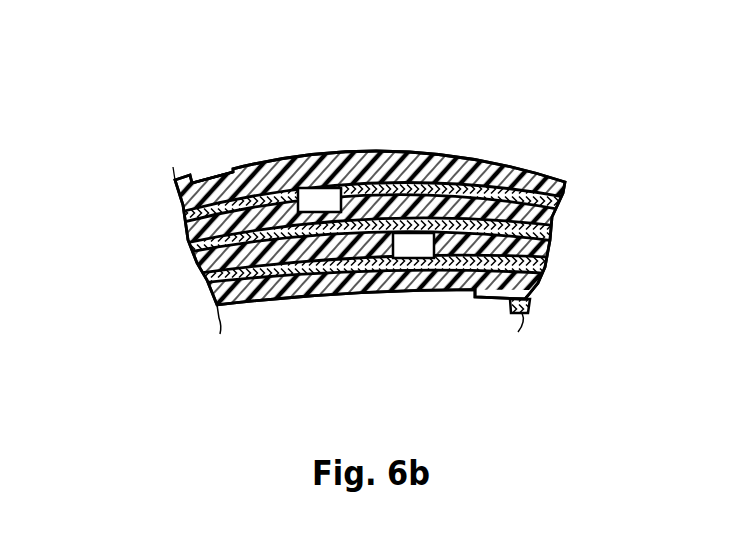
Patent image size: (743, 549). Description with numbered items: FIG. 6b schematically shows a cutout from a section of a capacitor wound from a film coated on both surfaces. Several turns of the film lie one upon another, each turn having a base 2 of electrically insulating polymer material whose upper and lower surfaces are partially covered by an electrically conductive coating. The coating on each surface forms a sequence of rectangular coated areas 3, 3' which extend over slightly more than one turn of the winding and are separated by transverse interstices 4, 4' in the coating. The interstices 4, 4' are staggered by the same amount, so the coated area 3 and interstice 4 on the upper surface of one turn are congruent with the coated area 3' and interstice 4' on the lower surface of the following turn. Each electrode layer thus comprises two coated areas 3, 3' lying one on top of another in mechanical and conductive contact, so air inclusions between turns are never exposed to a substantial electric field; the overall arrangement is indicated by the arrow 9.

The base 2 is at (473, 232).
The coated area 3 is at (413, 230).
The coated area 3' is at (436, 257).
The interstice 4 is at (313, 227).
The interstice 4' is at (398, 227).
The composite assembly 9 is at (620, 130).